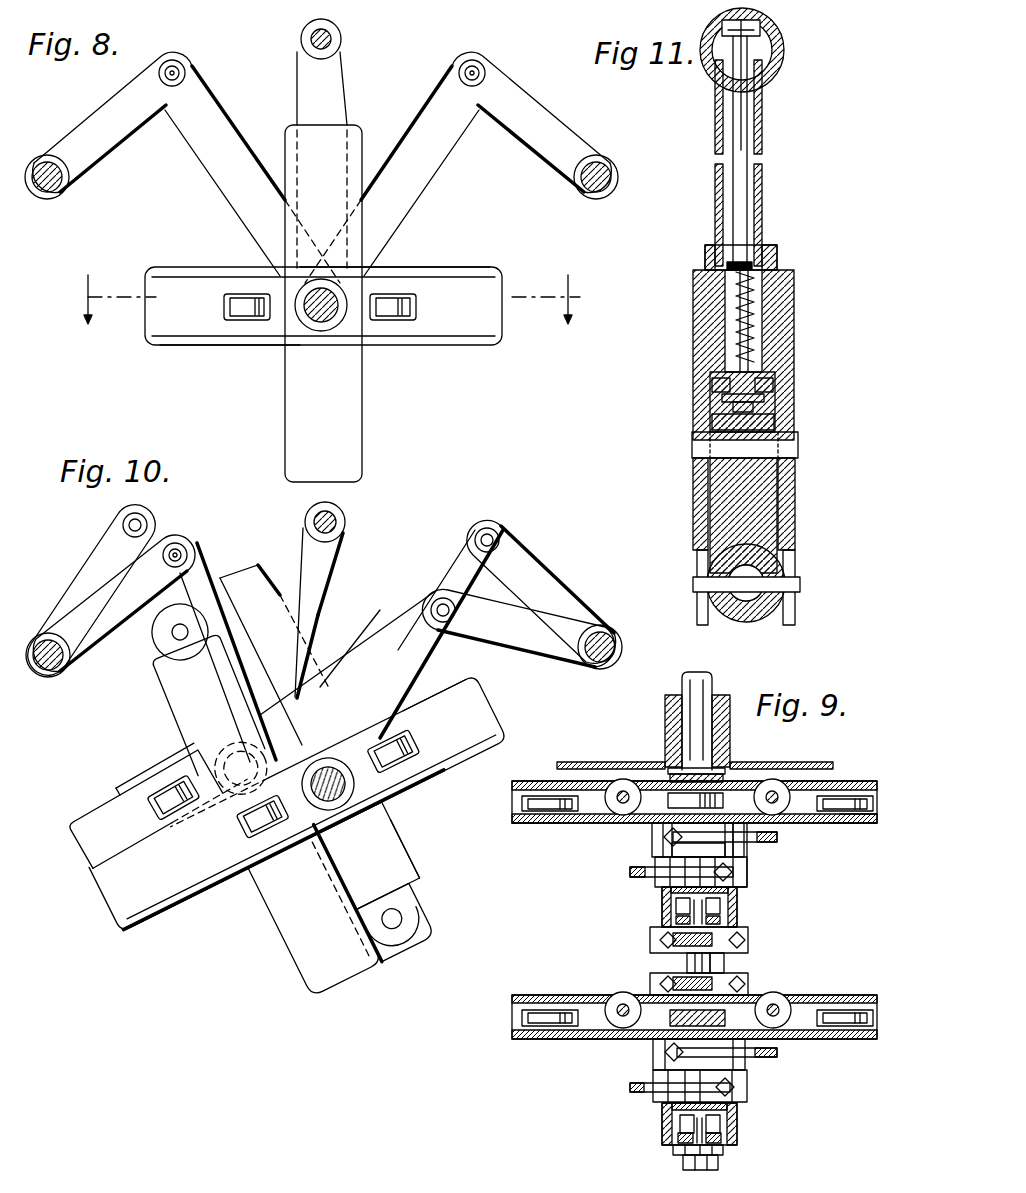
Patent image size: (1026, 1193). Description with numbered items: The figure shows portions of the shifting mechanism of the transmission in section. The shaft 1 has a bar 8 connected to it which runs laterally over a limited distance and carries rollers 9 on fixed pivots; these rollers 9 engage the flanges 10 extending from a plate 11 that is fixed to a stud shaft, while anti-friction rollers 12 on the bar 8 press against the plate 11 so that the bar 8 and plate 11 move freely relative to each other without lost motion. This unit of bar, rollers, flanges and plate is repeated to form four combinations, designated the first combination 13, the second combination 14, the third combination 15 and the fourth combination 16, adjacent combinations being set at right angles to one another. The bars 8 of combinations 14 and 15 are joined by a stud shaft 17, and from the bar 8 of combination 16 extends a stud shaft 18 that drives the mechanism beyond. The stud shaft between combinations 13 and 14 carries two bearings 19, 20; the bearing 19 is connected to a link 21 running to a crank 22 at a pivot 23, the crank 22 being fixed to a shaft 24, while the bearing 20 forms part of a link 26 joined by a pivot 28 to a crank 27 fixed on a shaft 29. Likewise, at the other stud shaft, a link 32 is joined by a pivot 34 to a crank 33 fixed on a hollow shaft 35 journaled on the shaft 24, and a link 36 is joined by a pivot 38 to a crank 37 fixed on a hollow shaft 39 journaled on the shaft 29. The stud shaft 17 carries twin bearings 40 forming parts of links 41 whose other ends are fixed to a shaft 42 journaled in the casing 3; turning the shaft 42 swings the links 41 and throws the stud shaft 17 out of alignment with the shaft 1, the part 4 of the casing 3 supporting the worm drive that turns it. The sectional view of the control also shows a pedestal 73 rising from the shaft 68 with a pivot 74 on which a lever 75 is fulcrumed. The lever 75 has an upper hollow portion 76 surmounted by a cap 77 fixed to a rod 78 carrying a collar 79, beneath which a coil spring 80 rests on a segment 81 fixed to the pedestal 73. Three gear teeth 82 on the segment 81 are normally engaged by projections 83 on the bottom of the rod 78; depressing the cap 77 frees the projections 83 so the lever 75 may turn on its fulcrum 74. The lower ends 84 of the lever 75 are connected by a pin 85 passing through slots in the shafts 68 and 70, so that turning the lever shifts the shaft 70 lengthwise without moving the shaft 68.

In FIG. 9, the shaft 1 is at (696, 673).
In FIG. 9, the casing 3 is at (748, 762).
In FIG. 9, the part of the casing 4 is at (640, 763).
In FIG. 8, the bar 8 is at (323, 306).
In FIG. 10, the bar 8 is at (484, 723).
In FIG. 9, the bar 8 is at (872, 785).
In FIG. 8, the rollers 9 is at (322, 299).
In FIG. 10, the rollers 9 is at (410, 913).
In FIG. 9, the rollers 9 is at (842, 785).
In FIG. 8, the flanges 10 is at (496, 268).
In FIG. 10, the flanges 10 is at (434, 695).
In FIG. 9, the flanges 10 is at (862, 824).
In FIG. 8, the plate 11 is at (318, 415).
In FIG. 10, the plate 11 is at (382, 820).
In FIG. 9, the plate 11 is at (858, 826).
In FIG. 8, the anti-friction rollers 12 is at (238, 293).
In FIG. 10, the anti-friction rollers 12 is at (238, 830).
In FIG. 9, the anti-friction rollers 12 is at (778, 785).
In FIG. 10, the first combination 13 is at (403, 846).
In FIG. 9, the first combination 13 is at (527, 824).
In FIG. 10, the second combination 14 is at (91, 814).
In FIG. 9, the second combination 14 is at (658, 912).
In FIG. 8, the third combination 15 is at (364, 430).
In FIG. 10, the third combination 15 is at (266, 919).
In FIG. 9, the third combination 15 is at (548, 1041).
In FIG. 8, the fourth combination 16 is at (170, 345).
In FIG. 10, the fourth combination 16 is at (150, 921).
In FIG. 9, the fourth combination 16 is at (660, 1137).
In FIG. 10, the stud shaft 17 is at (195, 753).
In FIG. 9, the stud shaft 17 is at (686, 960).
In FIG. 8, the stud shaft 18 is at (308, 318).
In FIG. 10, the stud shaft 18 is at (331, 802).
In FIG. 9, the stud shaft 18 is at (722, 1160).
In FIG. 9, the bearing 19 is at (660, 840).
In FIG. 9, the bearing 20 is at (748, 870).
In FIG. 10, the link 21 is at (450, 547).
In FIG. 9, the link 21 is at (770, 843).
In FIG. 10, the crank 22 is at (557, 587).
In FIG. 10, the pivot 23 is at (492, 537).
In FIG. 8, the shaft 24 is at (606, 168).
In FIG. 10, the shaft 24 is at (616, 650).
In FIG. 10, the link 26 is at (160, 540).
In FIG. 9, the link 26 is at (628, 873).
In FIG. 10, the crank 27 is at (108, 542).
In FIG. 10, the pivot 28 is at (134, 522).
In FIG. 8, the shaft 29 is at (44, 186).
In FIG. 10, the shaft 29 is at (53, 666).
In FIG. 10, the link 32 is at (413, 627).
In FIG. 9, the link 32 is at (782, 1052).
In FIG. 8, the crank 33 is at (458, 167).
In FIG. 10, the crank 33 is at (518, 628).
In FIG. 10, the pivot 34 is at (455, 610).
In FIG. 8, the hollow shaft 35 is at (600, 192).
In FIG. 10, the hollow shaft 35 is at (610, 622).
In FIG. 10, the link 36 is at (203, 582).
In FIG. 9, the link 36 is at (628, 1087).
In FIG. 8, the crank 37 is at (186, 167).
In FIG. 10, the crank 37 is at (102, 645).
In FIG. 10, the pivot 38 is at (181, 556).
In FIG. 8, the hollow shaft 39 is at (46, 158).
In FIG. 10, the hollow shaft 39 is at (44, 631).
In FIG. 9, the twin bearings 40 is at (748, 982).
In FIG. 8, the links 41 is at (326, 88).
In FIG. 10, the links 41 is at (318, 560).
In FIG. 9, the links 41 is at (718, 966).
In FIG. 8, the shaft 42 is at (308, 40).
In FIG. 10, the shaft 42 is at (346, 519).
In FIG. 11, the shaft 68 is at (764, 615).
In FIG. 11, the shaft 70 is at (742, 612).
In FIG. 11, the pedestal 73 is at (720, 486).
In FIG. 11, the pivot 74 is at (696, 450).
In FIG. 11, the lever 75 is at (706, 345).
In FIG. 11, the upper hollow portion 76 is at (766, 214).
In FIG. 11, the cap 77 is at (780, 76).
In FIG. 11, the rod 78 is at (738, 145).
In FIG. 11, the collar 79 is at (710, 258).
In FIG. 11, the coil spring 80 is at (738, 290).
In FIG. 11, the segment 81 is at (712, 396).
In FIG. 11, the gear teeth 82 is at (770, 392).
In FIG. 11, the projections 83 is at (778, 406).
In FIG. 11, the lower ends 84 is at (700, 532).
In FIG. 11, the pin 85 is at (802, 584).